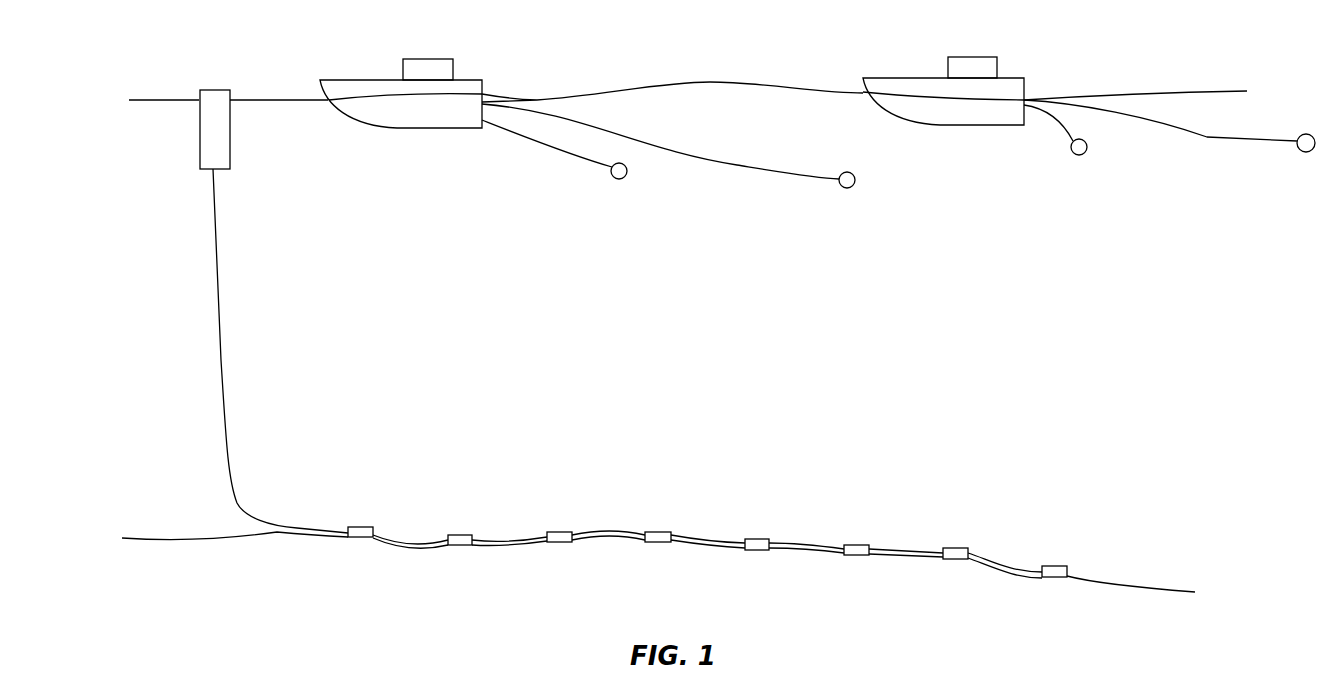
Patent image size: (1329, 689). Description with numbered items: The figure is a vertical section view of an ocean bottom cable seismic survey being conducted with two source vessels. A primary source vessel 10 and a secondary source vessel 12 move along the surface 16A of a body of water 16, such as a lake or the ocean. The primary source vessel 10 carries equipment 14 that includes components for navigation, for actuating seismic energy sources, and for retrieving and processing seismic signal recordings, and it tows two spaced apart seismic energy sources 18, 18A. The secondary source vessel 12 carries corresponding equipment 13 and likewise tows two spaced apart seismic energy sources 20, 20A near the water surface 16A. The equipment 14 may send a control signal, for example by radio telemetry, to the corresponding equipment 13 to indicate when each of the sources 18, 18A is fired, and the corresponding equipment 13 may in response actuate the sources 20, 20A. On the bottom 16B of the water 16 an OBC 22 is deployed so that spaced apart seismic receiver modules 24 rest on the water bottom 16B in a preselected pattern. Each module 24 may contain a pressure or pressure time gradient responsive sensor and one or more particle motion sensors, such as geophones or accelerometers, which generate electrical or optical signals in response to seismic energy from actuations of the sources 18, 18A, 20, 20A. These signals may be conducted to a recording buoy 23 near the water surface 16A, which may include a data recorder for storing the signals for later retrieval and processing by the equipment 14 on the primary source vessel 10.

The primary source vessel 10 is at (893, 78).
The secondary source vessel 12 is at (338, 80).
The corresponding equipment 13 is at (440, 59).
The equipment 14 is at (972, 57).
The body of water 16 is at (354, 220).
The water surface 16A is at (720, 82).
The water bottom 16B is at (143, 538).
The seismic energy source 18 is at (1077, 156).
The seismic energy source 18A is at (1304, 152).
The seismic energy source 20 is at (616, 180).
The seismic energy source 20A is at (845, 189).
The OBC 22 is at (283, 527).
The recording buoy 23 is at (206, 170).
The seismic receiver module 24 is at (358, 527).